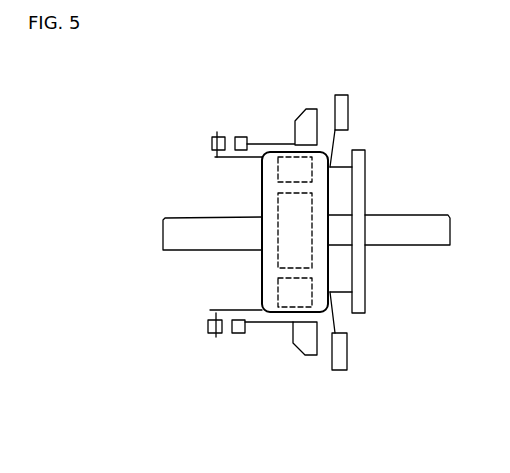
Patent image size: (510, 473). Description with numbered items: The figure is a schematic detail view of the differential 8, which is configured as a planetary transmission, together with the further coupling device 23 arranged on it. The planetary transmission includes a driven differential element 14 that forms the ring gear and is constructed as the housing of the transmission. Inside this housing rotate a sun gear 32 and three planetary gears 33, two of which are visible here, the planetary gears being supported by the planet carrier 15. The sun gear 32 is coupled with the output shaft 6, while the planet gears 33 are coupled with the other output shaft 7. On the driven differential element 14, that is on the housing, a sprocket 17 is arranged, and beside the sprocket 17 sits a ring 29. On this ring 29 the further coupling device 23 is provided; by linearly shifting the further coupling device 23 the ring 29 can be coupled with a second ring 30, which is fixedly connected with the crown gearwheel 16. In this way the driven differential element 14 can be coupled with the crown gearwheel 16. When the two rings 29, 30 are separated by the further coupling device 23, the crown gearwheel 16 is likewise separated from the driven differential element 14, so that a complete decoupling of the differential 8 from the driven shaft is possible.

The output shaft 6 is at (172, 248).
The output shaft 7 is at (427, 240).
The differential 8 is at (272, 362).
The driven differential element 14 is at (262, 209).
The planet carrier 15 is at (365, 188).
The crown gearwheel 16 is at (308, 350).
The sprocket 17 is at (347, 357).
The further coupling device 23 is at (217, 137).
The ring 29 is at (233, 158).
The ring 30 is at (257, 144).
The sun gear 32 is at (312, 250).
The planetary gears 33 is at (280, 170).